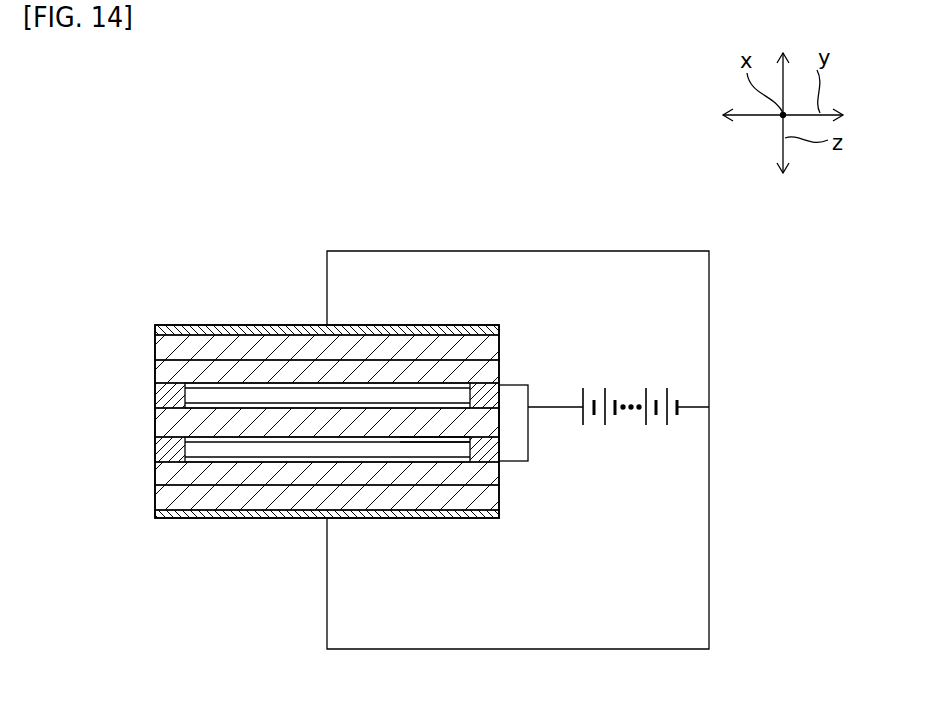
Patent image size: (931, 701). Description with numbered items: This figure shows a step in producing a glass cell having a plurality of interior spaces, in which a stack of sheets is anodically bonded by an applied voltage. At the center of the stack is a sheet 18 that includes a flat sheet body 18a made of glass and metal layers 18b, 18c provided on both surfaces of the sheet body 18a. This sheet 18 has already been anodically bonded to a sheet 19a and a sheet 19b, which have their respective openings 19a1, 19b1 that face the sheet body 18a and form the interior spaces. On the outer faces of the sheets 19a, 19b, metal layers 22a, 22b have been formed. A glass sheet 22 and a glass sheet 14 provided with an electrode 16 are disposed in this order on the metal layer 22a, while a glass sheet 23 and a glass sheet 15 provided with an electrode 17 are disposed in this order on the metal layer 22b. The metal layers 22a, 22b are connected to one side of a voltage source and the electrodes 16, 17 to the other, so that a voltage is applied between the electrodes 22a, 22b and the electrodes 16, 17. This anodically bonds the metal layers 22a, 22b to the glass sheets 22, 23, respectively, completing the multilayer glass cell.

The glass sheet 14 is at (153, 350).
The glass sheet 15 is at (153, 498).
The electrode 16 is at (303, 325).
The electrode 17 is at (277, 518).
The sheet 18 is at (155, 427).
The sheet body 18a is at (417, 440).
The metal layer 18b is at (173, 390).
The metal layer 18c is at (171, 445).
The sheet 19a is at (153, 396).
The opening 19a1 is at (188, 392).
The sheet 19b is at (153, 452).
The opening 19b1 is at (187, 450).
The glass sheet 22 is at (153, 373).
The metal layer 22a is at (483, 390).
The metal layer 22b is at (478, 463).
The glass sheet 23 is at (153, 468).